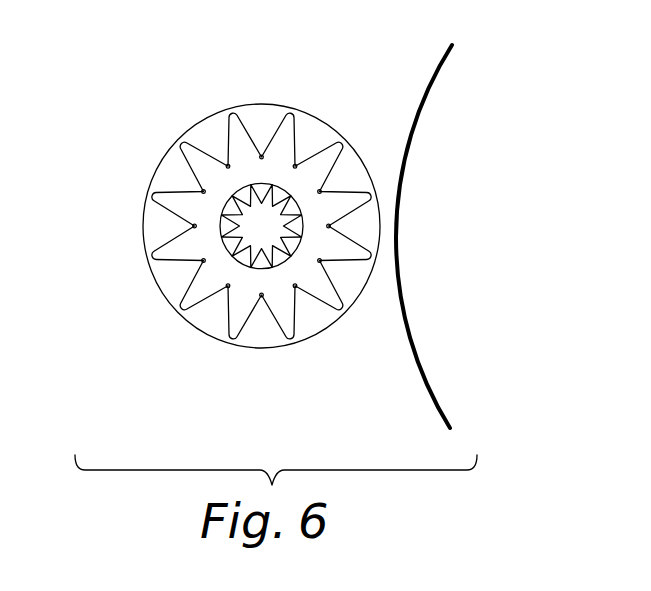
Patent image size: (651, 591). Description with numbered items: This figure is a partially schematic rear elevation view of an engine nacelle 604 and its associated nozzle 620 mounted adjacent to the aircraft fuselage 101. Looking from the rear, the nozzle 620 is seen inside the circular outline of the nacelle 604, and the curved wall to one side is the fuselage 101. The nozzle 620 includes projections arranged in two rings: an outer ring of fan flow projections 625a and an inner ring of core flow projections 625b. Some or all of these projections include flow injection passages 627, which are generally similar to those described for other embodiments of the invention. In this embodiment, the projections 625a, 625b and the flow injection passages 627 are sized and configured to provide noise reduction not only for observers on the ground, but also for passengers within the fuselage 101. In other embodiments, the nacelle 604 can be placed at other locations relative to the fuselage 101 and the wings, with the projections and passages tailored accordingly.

The nozzle 620 is at (148, 126).
The engine nacelle 604 is at (144, 237).
The fan flow projections 625a is at (338, 180).
The core flow projections 625b is at (299, 222).
The flow injection passages 627 is at (228, 167).
The aircraft fuselage 101 is at (417, 112).